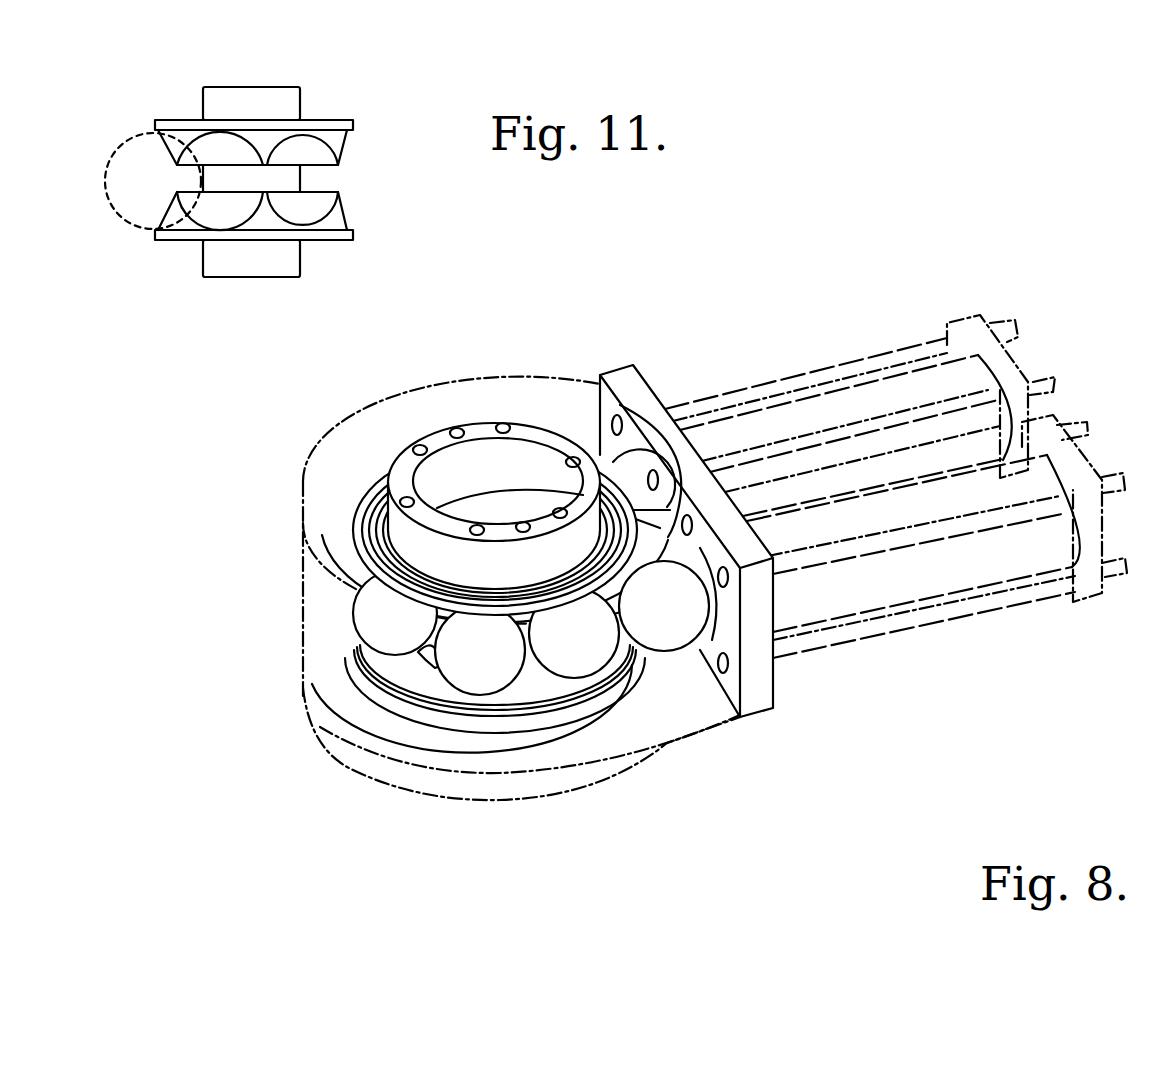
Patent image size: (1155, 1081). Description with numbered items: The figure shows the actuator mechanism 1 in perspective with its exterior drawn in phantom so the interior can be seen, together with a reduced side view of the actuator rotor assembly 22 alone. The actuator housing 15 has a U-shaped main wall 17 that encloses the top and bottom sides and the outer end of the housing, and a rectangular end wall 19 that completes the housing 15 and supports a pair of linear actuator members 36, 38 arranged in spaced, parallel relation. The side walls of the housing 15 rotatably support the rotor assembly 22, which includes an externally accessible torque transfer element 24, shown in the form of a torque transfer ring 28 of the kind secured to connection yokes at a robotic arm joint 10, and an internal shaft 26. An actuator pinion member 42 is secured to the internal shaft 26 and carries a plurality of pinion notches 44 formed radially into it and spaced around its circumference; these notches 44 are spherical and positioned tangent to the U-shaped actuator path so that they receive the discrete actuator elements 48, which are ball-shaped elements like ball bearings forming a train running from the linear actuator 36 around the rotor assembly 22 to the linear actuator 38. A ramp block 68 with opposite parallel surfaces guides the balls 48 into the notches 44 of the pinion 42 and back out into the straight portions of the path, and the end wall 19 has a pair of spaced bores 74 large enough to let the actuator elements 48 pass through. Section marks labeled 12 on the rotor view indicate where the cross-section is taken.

In FIG. 8, the actuator mechanism 1 is at (278, 445).
In FIG. 8, the joint 10 is at (278, 619).
In FIG. 11, the section line 12 is at (95, 177).
In FIG. 8, the actuator housing 15 is at (303, 669).
In FIG. 8, the U-shaped main wall 17 is at (303, 643).
In FIG. 8, the end wall 19 is at (612, 366).
In FIG. 11, the actuator rotor assembly 22 is at (195, 292).
In FIG. 8, the actuator rotor assembly 22 is at (444, 400).
In FIG. 11, the torque transfer element 24 is at (291, 87).
In FIG. 8, the torque transfer element 24 is at (526, 428).
In FIG. 8, the internal shaft 26 is at (466, 508).
In FIG. 11, the torque transfer ring 28 is at (213, 86).
In FIG. 8, the torque transfer ring 28 is at (404, 462).
In FIG. 8, the linear actuator member 36 is at (828, 386).
In FIG. 8, the linear actuator member 38 is at (898, 603).
In FIG. 11, the actuator pinion member 42 is at (270, 140).
In FIG. 11, the pinion notches 44 is at (220, 143).
In FIG. 8, the pinion notches 44 is at (440, 664).
In FIG. 11, the actuator elements 48 is at (130, 230).
In FIG. 8, the actuator elements 48 is at (559, 662).
In FIG. 8, the ramp block 68 is at (651, 555).
In FIG. 8, the bores 74 is at (703, 650).